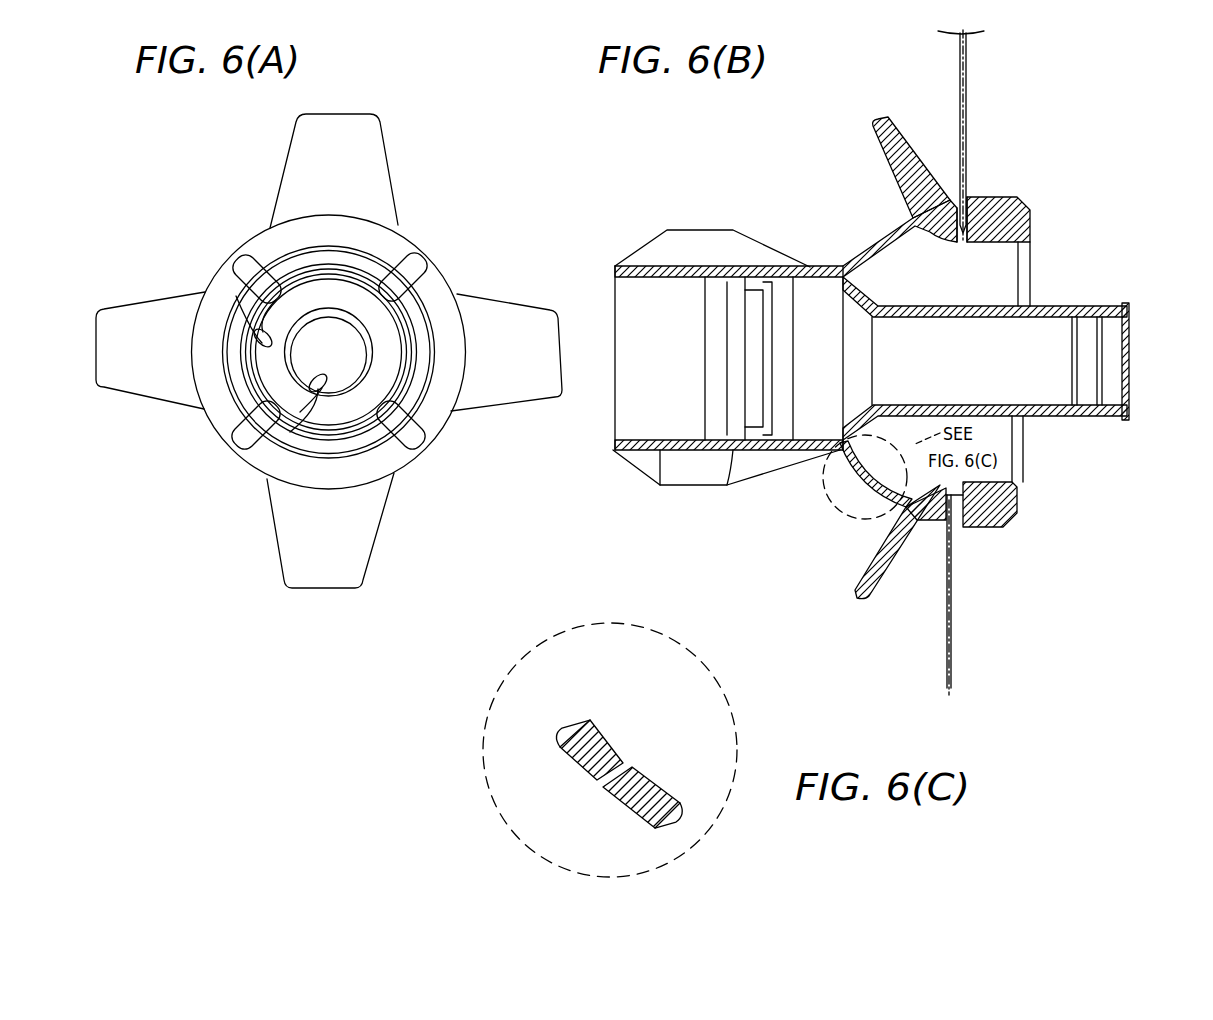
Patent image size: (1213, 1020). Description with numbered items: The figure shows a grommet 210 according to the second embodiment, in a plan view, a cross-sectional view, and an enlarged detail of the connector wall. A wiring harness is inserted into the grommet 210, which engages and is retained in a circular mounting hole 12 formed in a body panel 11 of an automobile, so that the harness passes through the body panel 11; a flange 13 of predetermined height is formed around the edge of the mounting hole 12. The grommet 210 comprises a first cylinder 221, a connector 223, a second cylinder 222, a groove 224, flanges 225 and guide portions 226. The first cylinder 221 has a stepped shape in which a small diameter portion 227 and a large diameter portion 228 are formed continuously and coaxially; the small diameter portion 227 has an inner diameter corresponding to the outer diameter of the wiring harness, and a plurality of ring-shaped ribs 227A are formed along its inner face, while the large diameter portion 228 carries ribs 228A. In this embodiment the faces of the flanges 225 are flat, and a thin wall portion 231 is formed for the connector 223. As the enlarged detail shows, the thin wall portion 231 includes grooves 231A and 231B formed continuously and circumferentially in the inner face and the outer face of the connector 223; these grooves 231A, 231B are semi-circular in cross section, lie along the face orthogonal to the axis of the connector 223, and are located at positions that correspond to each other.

In FIG. 6B, the body panel 11 is at (967, 84).
In FIG. 6B, the mounting hole 12 is at (963, 245).
In FIG. 6B, the flange 13 is at (964, 222).
In FIG. 6A, the grommet 210 is at (411, 520).
In FIG. 6B, the grommet 210 is at (1106, 136).
In FIG. 6A, the first cylinder 221 is at (407, 457).
In FIG. 6B, the first cylinder 221 is at (740, 452).
In FIG. 6A, the second cylinder 222 is at (452, 268).
In FIG. 6B, the second cylinder 222 is at (919, 217).
In FIG. 6A, the connector 223 is at (378, 256).
In FIG. 6B, the connector 223 is at (870, 500).
In FIG. 6C, the connector 223 is at (663, 790).
In FIG. 6B, the groove 224 is at (962, 535).
In FIG. 6A, the flanges 225 is at (150, 322).
In FIG. 6B, the flanges 225 is at (897, 152).
In FIG. 6A, the guide portions 226 is at (253, 262).
In FIG. 6B, the guide portions 226 is at (704, 243).
In FIG. 6B, the small diameter portion 227 is at (1057, 413).
In FIG. 6A, the ring-shaped ribs 227A is at (322, 389).
In FIG. 6B, the ring-shaped ribs 227A is at (1078, 332).
In FIG. 6A, the large diameter portion 228 is at (243, 388).
In FIG. 6B, the large diameter portion 228 is at (658, 452).
In FIG. 6A, the rib of large diameter portion 228A is at (241, 339).
In FIG. 6B, the rib of large diameter portion 228A is at (780, 337).
In FIG. 6A, the thin wall portion 231 is at (435, 364).
In FIG. 6B, the thin wall portion 231 is at (836, 470).
In FIG. 6C, the thin wall portion 231 is at (600, 769).
In FIG. 6C, the groove 231A is at (600, 790).
In FIG. 6C, the groove 231B is at (625, 760).